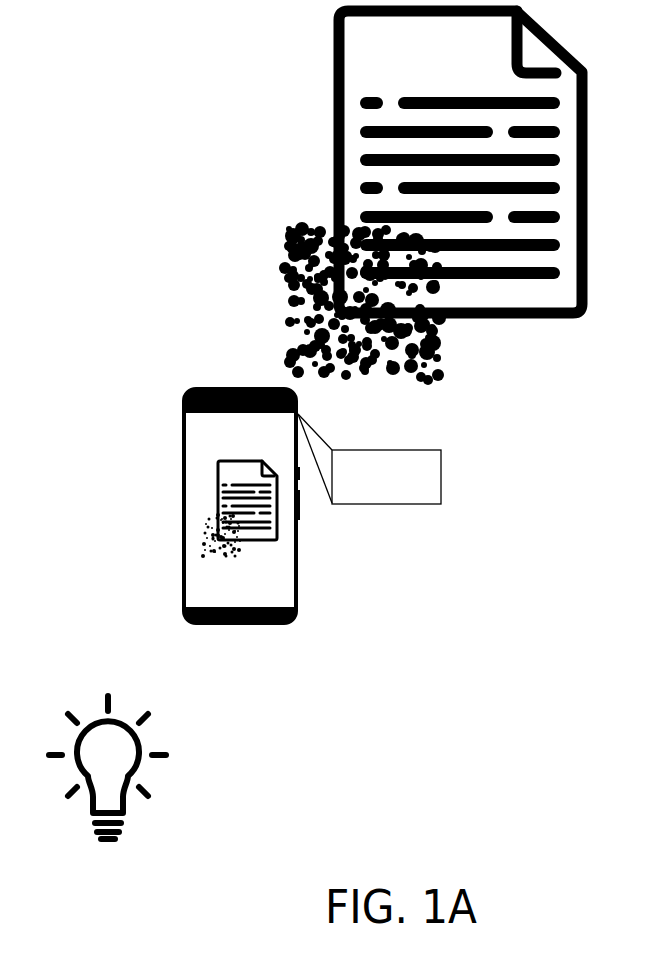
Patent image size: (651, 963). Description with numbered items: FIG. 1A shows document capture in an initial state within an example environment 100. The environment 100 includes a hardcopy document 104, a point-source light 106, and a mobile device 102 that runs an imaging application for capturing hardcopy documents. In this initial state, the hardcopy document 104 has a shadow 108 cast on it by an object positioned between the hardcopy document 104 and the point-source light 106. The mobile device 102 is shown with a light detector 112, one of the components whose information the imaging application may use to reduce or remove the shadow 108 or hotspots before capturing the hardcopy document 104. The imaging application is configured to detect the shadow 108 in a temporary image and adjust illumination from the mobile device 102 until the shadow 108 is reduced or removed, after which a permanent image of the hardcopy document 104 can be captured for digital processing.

The environment 100 is at (136, 55).
The mobile device 102 is at (182, 520).
The hardcopy document 104 is at (334, 145).
The point-source light 106 is at (157, 752).
The shadow 108 is at (256, 257).
The light detector 112 is at (420, 505).